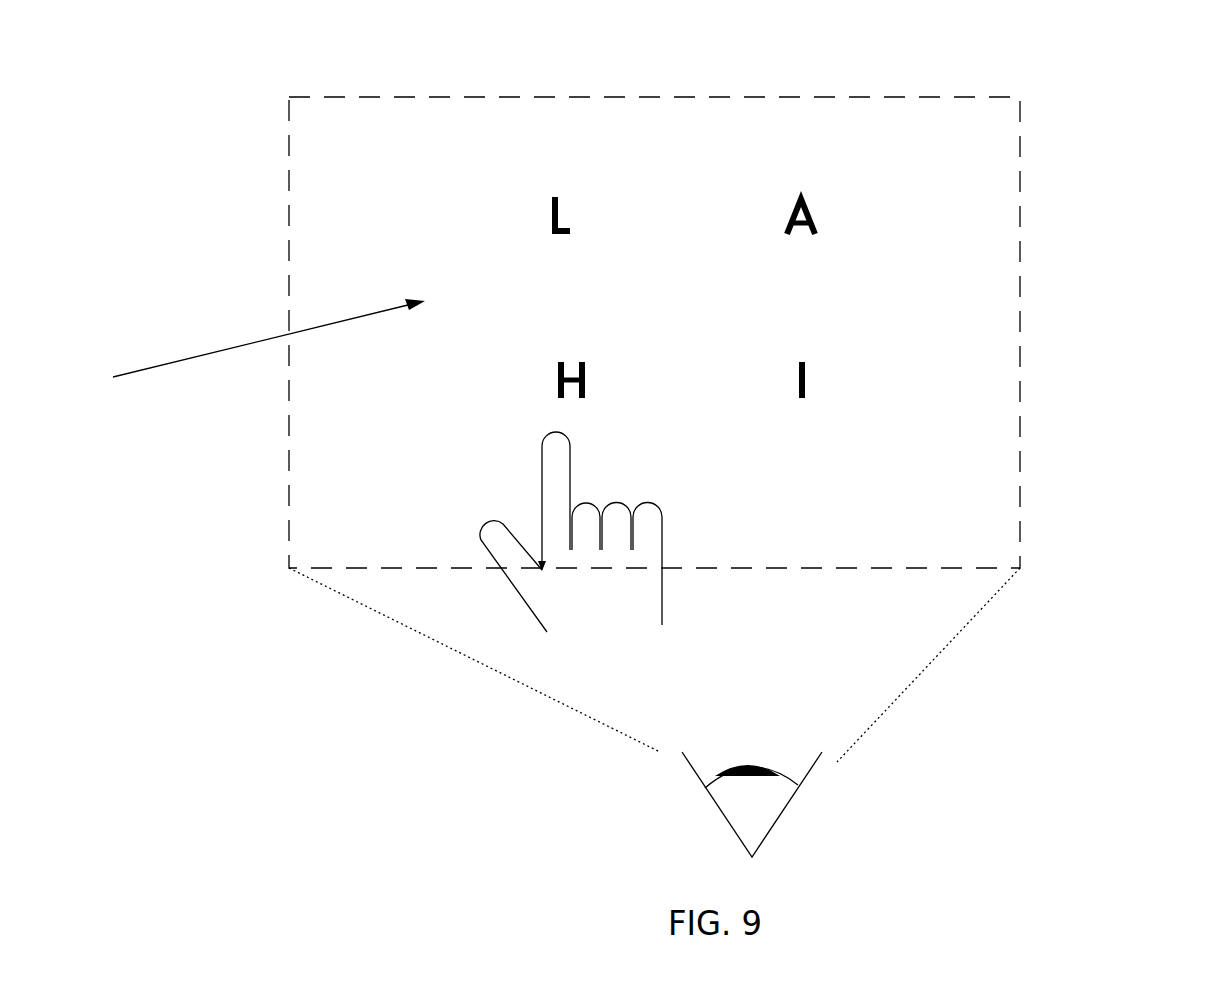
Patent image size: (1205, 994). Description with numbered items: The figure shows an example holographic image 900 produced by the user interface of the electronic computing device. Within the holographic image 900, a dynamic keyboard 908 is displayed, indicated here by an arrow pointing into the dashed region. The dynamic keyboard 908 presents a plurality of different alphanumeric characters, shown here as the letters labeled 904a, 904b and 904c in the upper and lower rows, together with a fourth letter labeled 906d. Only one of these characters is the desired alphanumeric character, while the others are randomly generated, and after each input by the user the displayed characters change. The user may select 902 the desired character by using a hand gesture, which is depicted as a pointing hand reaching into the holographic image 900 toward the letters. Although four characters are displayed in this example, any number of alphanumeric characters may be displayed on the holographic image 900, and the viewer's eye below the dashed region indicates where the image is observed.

The holographic image 900 is at (262, 170).
The select 902 is at (560, 450).
The alphanumeric character 904a is at (575, 198).
The alphanumeric character 904b is at (828, 215).
The alphanumeric character 904c is at (818, 372).
The letter H 906d is at (602, 372).
The dynamic keyboard 908 is at (247, 345).